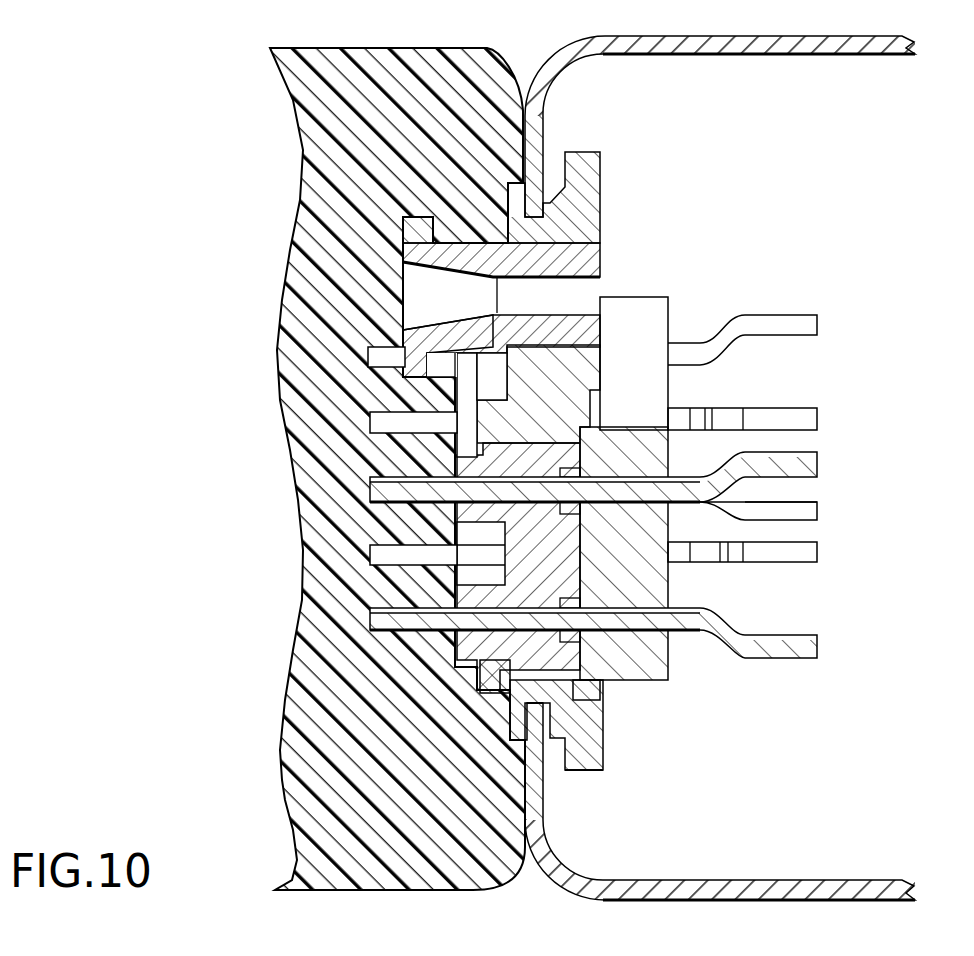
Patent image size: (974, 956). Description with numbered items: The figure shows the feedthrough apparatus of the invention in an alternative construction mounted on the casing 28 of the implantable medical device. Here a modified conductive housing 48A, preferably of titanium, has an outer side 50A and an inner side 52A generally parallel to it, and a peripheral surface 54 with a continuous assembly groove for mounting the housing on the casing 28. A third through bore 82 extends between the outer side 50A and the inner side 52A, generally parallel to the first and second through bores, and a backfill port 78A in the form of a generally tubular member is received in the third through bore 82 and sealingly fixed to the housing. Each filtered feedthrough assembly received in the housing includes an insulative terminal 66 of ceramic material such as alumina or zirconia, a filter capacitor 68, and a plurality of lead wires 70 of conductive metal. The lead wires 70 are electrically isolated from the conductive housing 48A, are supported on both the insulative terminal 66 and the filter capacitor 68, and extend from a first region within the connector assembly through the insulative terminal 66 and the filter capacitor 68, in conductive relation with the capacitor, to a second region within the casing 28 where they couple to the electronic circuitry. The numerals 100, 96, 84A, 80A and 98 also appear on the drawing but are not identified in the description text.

The wall 100 is at (282, 783).
The casing 28 is at (828, 882).
The modified conductive housing 48A is at (585, 152).
The rib 96 is at (402, 222).
The third through bore 82 is at (572, 258).
The backfill port 78A is at (470, 238).
The gap 84A is at (405, 292).
The support member 80A is at (562, 290).
The lip 98 is at (403, 334).
The filter capacitor 68 is at (655, 590).
The insulative terminal 66 is at (390, 514).
The lead wires 70 is at (383, 415).
The inner side 52A is at (604, 741).
The peripheral surface 54 is at (587, 772).
The outer side 50A is at (525, 712).